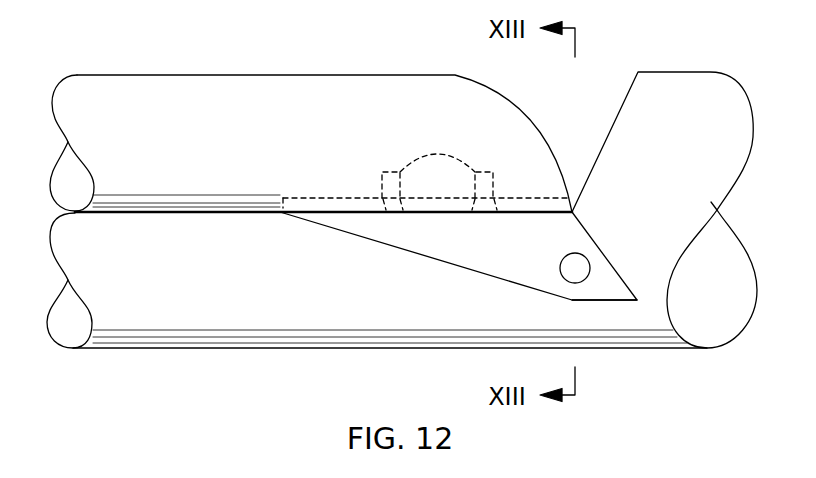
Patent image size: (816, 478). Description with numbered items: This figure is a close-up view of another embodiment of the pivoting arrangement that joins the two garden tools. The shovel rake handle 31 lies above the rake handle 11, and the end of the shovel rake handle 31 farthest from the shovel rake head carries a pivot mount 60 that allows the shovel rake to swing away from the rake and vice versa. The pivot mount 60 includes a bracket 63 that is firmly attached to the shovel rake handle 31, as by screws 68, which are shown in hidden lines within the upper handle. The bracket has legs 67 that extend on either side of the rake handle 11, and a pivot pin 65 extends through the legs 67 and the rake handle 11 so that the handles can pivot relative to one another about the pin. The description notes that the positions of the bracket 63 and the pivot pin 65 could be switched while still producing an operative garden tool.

The shovel rake handle 31 is at (206, 154).
The rake handle 11 is at (206, 297).
The pivot mount 60 is at (388, 252).
The legs 67 is at (531, 257).
The pivot pin 65 is at (589, 263).
The bracket 63 is at (303, 203).
The screws 68 is at (437, 152).